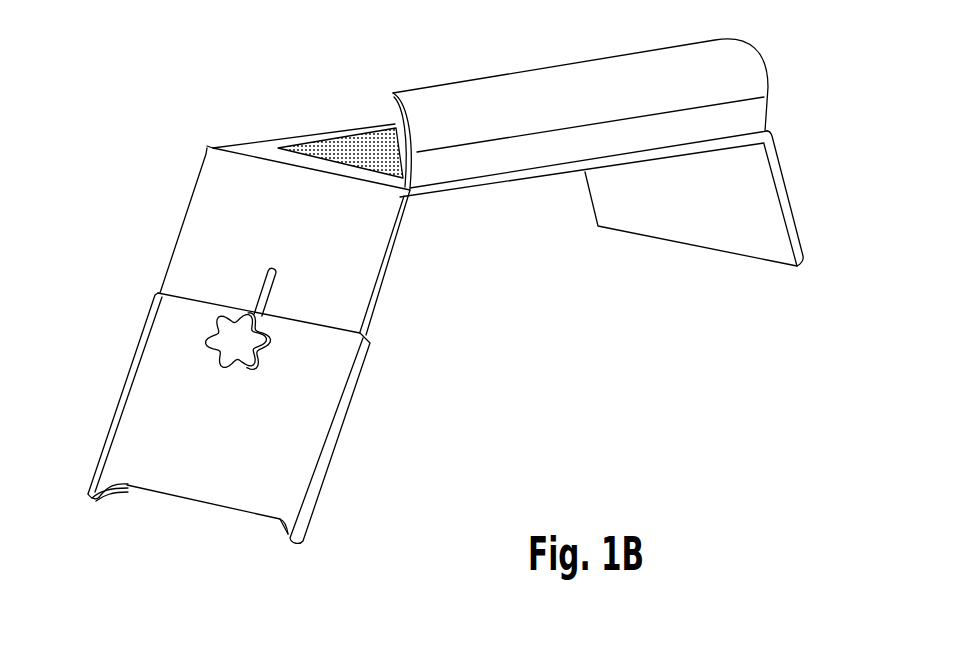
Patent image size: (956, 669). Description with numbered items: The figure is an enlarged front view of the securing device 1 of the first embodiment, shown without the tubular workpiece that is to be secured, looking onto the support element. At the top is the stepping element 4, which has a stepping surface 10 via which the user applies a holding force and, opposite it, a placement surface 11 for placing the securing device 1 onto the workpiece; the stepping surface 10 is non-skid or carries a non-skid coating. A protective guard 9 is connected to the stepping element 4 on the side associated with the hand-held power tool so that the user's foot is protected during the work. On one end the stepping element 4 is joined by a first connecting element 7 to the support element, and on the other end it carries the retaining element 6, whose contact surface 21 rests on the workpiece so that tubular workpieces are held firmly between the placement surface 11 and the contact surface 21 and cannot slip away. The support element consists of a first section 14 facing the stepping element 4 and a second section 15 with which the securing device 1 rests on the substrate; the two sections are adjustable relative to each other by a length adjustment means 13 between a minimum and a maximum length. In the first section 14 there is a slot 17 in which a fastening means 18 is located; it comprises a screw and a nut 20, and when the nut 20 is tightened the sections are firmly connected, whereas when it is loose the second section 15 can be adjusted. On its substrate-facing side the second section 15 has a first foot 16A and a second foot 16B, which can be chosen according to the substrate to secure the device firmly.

The securing device 1 is at (596, 381).
The stepping element 4 is at (310, 122).
The retaining element 6 is at (792, 168).
The first connecting element 7 is at (234, 148).
The protective guard 9 is at (552, 102).
The stepping surface 10 is at (342, 130).
The placement surface 11 is at (505, 190).
The length adjustment means 13 is at (188, 332).
The first section 14 is at (210, 218).
The second section 15 is at (142, 422).
The first foot 16A is at (91, 511).
The second foot 16B is at (275, 540).
The slot 17 is at (266, 289).
The fastening means 18 is at (280, 353).
The nut 20 is at (228, 345).
The contact surface 21 is at (713, 212).